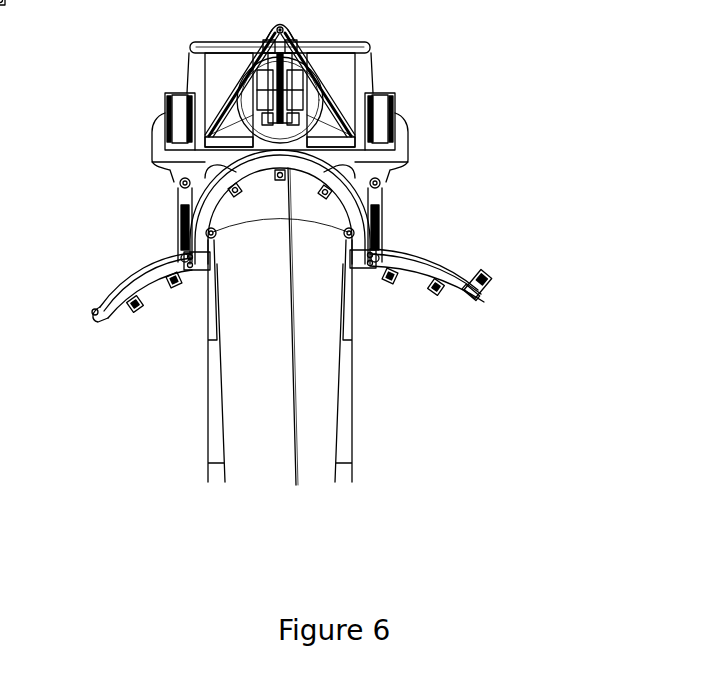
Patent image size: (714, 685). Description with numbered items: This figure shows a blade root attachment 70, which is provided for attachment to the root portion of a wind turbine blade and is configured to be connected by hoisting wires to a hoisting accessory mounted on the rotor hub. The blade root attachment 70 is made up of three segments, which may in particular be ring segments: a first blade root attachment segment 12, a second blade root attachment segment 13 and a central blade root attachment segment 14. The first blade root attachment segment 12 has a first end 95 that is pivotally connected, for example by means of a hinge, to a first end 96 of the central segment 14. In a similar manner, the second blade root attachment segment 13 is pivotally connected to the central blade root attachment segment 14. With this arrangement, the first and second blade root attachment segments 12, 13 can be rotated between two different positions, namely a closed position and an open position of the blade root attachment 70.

The first blade root attachment segment 12 is at (122, 274).
The second blade root attachment segment 13 is at (423, 274).
The central blade root attachment segment 14 is at (388, 180).
The blade root attachment 70 is at (410, 237).
The first end of the first blade root attachment segment 95 is at (192, 270).
The first end of the central segment 96 is at (205, 278).